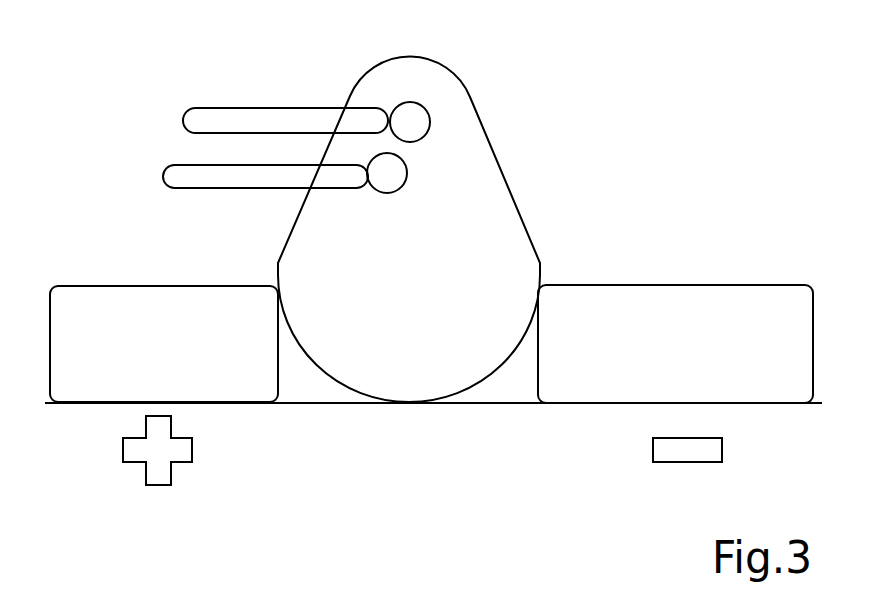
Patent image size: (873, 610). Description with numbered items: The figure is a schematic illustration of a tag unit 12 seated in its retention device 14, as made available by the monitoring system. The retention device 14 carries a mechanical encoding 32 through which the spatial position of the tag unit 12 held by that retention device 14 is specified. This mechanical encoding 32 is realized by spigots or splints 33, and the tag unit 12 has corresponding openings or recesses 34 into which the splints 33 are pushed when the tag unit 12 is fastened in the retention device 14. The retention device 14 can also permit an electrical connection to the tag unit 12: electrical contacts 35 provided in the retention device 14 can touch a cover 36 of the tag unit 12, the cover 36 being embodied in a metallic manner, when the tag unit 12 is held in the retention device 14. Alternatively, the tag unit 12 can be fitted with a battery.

The tag unit 12 is at (497, 155).
The retention device 14 is at (693, 285).
The mechanical encoding 32 is at (130, 94).
The splints 33 is at (237, 108).
The recesses 34 is at (428, 116).
The electrical contacts 35 is at (260, 403).
The cover 36 is at (410, 323).